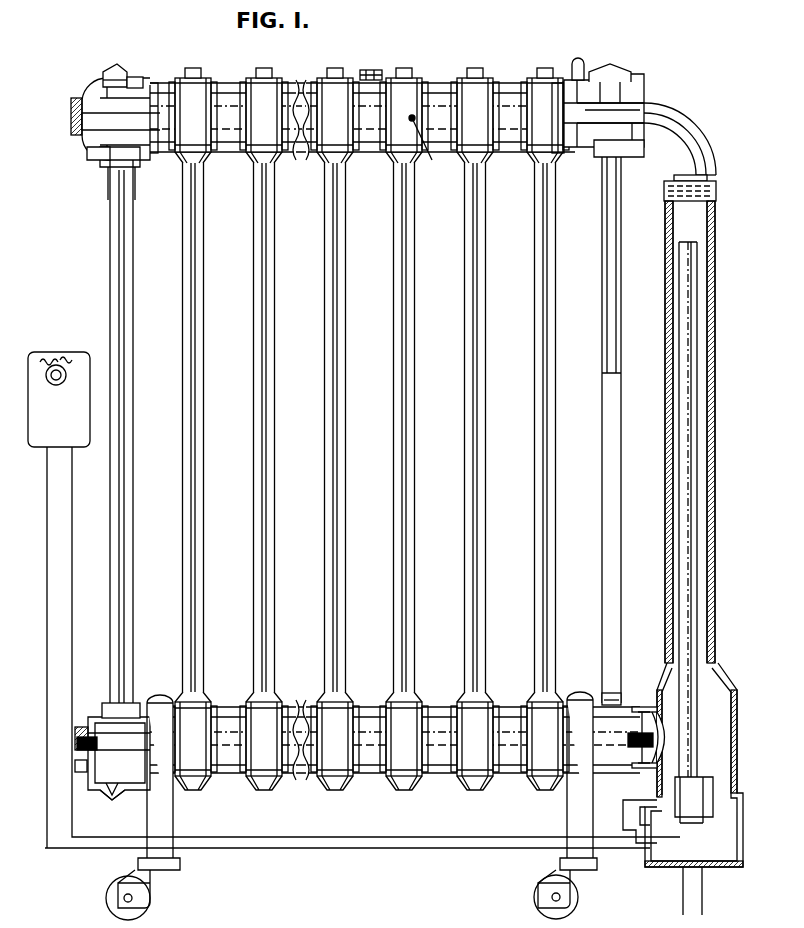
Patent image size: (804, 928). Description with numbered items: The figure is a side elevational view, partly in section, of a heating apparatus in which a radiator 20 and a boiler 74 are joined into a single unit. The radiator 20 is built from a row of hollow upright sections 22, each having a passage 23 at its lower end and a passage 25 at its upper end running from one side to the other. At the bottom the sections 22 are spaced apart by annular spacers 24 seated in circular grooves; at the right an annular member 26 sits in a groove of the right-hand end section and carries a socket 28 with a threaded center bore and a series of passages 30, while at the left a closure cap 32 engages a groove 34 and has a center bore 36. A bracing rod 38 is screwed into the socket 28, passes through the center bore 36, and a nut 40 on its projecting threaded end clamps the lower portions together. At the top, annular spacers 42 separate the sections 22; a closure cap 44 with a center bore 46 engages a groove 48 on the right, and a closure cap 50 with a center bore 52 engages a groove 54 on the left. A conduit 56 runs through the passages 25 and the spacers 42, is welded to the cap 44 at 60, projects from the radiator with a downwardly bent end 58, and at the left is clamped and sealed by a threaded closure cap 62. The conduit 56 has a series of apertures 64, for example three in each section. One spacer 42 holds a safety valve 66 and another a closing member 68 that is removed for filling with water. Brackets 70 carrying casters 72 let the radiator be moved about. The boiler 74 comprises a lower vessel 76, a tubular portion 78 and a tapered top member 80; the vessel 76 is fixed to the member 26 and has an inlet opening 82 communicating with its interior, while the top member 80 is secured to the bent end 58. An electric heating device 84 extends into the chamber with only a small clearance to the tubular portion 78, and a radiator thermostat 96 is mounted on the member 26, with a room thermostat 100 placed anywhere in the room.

The radiator 20 is at (359, 373).
The hollow upright sections 22 is at (176, 258).
The passage 23 is at (106, 780).
The annular spacers 24 is at (186, 785).
The passage 25 is at (140, 82).
The annular member 26 is at (642, 707).
The socket 28 is at (678, 737).
The passages 30 is at (650, 714).
The closure cap 32 is at (88, 720).
The groove 34 is at (100, 706).
The center bore 36 is at (77, 745).
The bracing rod 38 is at (508, 730).
The nut 40 is at (75, 733).
The annular spacers 42 is at (190, 80).
The closure cap 44 is at (640, 80).
The center bore 46 is at (644, 104).
The groove 48 is at (612, 70).
The closure cap 50 is at (97, 84).
The center bore 52 is at (92, 158).
The groove 54 is at (112, 72).
The conduit 56 is at (155, 150).
The downwardly bent end 58 is at (706, 145).
The welded connection 60 is at (645, 90).
The threaded closure cap 62 is at (71, 130).
The apertures 64 is at (96, 108).
The safety valve 66 is at (584, 62).
The closing member 68 is at (378, 70).
The brackets 70 is at (152, 812).
The casters 72 is at (118, 868).
The boiler 74 is at (725, 421).
The lower vessel 76 is at (743, 756).
The tubular portion 78 is at (716, 455).
The tapered hollow top member 80 is at (716, 185).
The inlet opening 82 is at (660, 740).
The electric heating device 84 is at (698, 336).
The radiator thermostat 96 is at (628, 790).
The room thermostat 100 is at (42, 440).